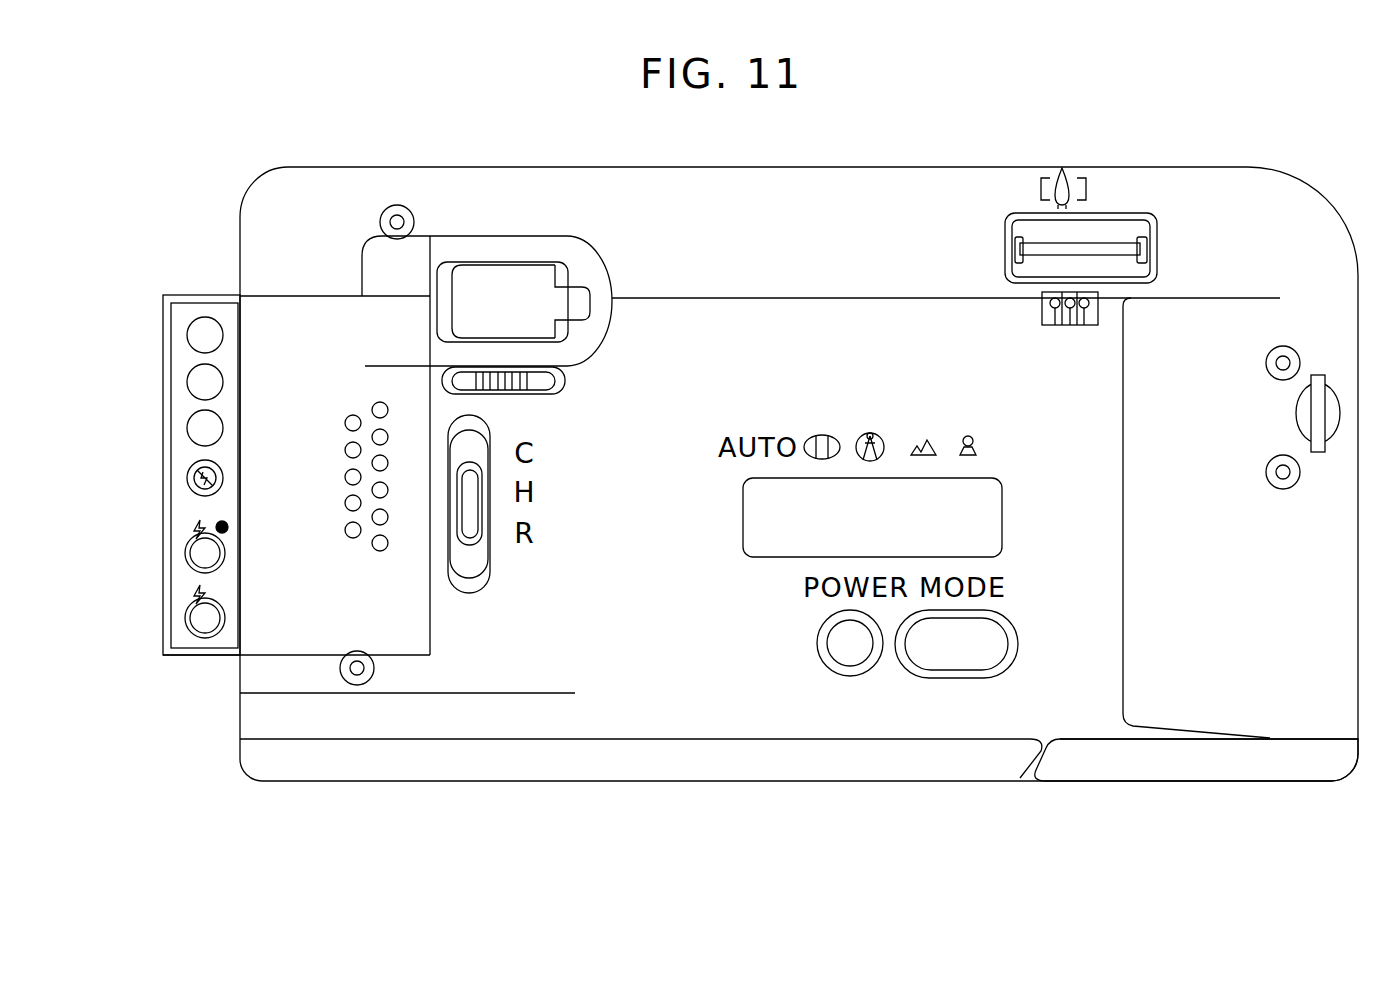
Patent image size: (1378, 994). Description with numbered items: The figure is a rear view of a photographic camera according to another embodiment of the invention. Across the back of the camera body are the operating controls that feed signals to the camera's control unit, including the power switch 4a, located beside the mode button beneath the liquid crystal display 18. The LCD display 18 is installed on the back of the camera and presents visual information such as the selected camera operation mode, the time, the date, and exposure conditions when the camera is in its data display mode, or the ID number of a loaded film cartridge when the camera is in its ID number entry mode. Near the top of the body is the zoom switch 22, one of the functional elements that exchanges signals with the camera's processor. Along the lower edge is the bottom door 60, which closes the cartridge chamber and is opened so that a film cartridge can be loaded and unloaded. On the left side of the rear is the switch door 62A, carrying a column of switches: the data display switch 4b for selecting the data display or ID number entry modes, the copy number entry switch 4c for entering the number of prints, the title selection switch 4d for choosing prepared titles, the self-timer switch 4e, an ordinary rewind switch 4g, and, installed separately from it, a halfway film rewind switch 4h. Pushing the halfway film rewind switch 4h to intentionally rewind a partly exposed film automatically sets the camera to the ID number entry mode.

The zoom switch 22 is at (1113, 246).
The liquid crystal device (LCD) display 18 is at (1003, 513).
The power switch 4a is at (847, 650).
The bottom door 60 is at (1178, 765).
The switch door 62A is at (190, 656).
The data display switch (D) 4b is at (187, 337).
The copy number entry switch (PQ) 4c is at (187, 383).
The title selection switch (ST) 4d is at (187, 429).
The self-timer switch 4e is at (187, 479).
The ordinary rewind switch 4g is at (185, 553).
The halfway film rewind switch 4h is at (185, 618).